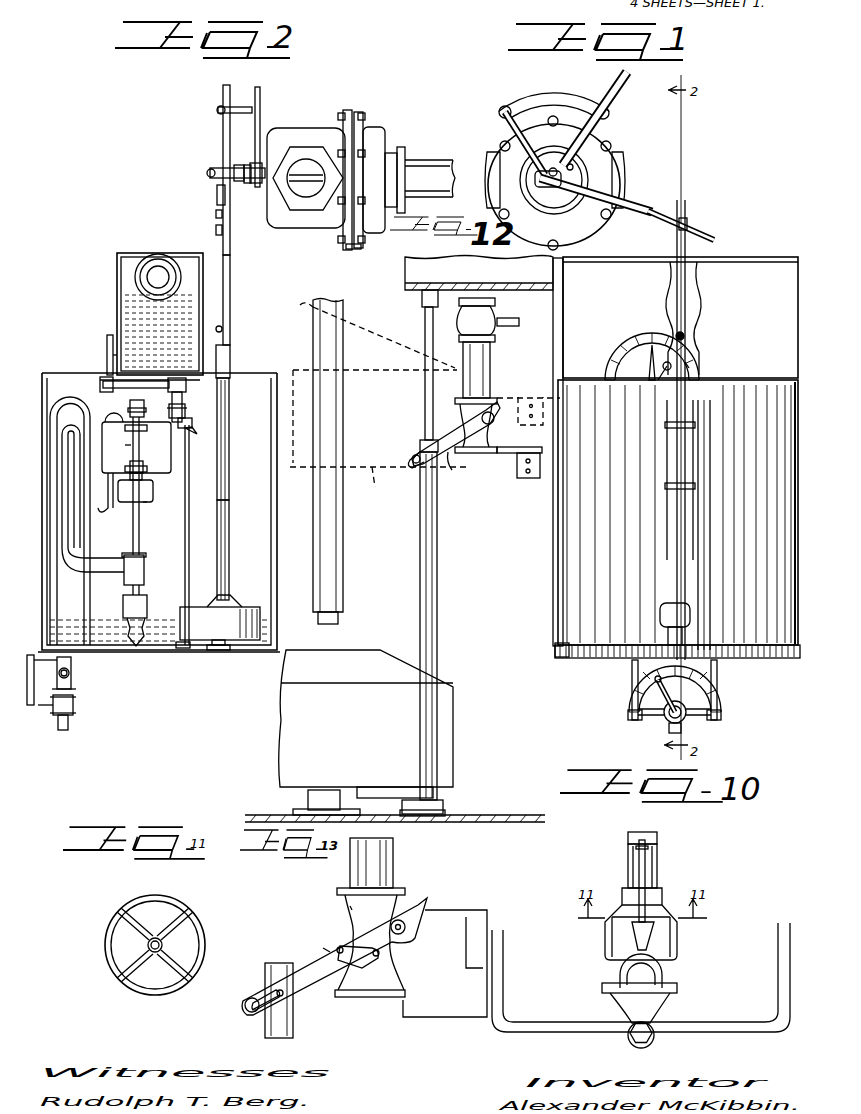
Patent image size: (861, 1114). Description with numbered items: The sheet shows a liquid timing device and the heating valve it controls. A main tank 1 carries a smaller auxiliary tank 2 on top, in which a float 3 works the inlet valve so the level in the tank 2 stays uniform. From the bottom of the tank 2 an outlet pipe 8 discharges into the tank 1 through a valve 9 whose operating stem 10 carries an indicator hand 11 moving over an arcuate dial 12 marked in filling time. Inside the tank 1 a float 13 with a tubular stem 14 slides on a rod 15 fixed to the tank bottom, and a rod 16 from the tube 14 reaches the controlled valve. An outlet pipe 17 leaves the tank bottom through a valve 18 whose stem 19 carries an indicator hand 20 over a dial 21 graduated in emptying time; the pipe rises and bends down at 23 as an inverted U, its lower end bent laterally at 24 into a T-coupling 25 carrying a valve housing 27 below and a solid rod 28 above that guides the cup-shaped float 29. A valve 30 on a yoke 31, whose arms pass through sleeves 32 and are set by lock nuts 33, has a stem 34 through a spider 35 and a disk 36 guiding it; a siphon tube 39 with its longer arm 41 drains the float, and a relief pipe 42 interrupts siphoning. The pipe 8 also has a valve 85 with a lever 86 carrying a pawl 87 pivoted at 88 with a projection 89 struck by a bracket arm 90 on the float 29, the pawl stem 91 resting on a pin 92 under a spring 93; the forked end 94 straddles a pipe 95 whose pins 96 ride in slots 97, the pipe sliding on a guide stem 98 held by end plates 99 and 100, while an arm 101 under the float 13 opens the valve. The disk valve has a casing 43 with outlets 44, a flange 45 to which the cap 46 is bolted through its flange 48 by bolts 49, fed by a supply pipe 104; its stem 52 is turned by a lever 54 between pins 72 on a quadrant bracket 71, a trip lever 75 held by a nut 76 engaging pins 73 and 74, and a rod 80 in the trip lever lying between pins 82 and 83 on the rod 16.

In FIG. 2, the main tank 1 is at (278, 503).
In FIG. 1, the main tank 1 is at (632, 542).
In FIG. 12, the main tank 1 is at (275, 504).
In FIG. 2, the auxiliary tank 2 is at (117, 264).
In FIG. 1, the auxiliary tank 2 is at (680, 317).
In FIG. 2, the float 3 is at (158, 255).
In FIG. 2, the outlet pipe 8 is at (172, 401).
In FIG. 12, the outlet pipe 8 is at (490, 366).
In FIG. 13, the outlet pipe 8 is at (393, 860).
In FIG. 2, the valve 9 is at (187, 386).
In FIG. 12, the valve 9 is at (480, 314).
In FIG. 2, the operating stem 10 is at (150, 388).
In FIG. 12, the operating stem 10 is at (518, 325).
In FIG. 2, the indicator hand 11 is at (108, 356).
In FIG. 1, the indicator hand 11 is at (686, 363).
In FIG. 2, the arcuate dial 12 is at (110, 337).
In FIG. 1, the arcuate dial 12 is at (638, 346).
In FIG. 2, the float 13 is at (233, 605).
In FIG. 1, the float 13 is at (668, 603).
In FIG. 12, the float 13 is at (366, 641).
In FIG. 2, the tubular stem 14 is at (230, 538).
In FIG. 12, the tubular stem 14 is at (340, 561).
In FIG. 2, the rod 15 is at (230, 443).
In FIG. 1, the rod 15 is at (530, 214).
In FIG. 12, the rod 15 is at (340, 618).
In FIG. 2, the rod 16 is at (230, 288).
In FIG. 1, the rod 16 is at (686, 288).
In FIG. 2, the outlet pipe 17 is at (72, 673).
In FIG. 1, the outlet pipe 17 is at (668, 730).
In FIG. 2, the valve 18 is at (75, 706).
In FIG. 2, the stem 19 is at (56, 720).
In FIG. 2, the indicator hand 20 is at (32, 672).
In FIG. 1, the indicator hand 20 is at (631, 709).
In FIG. 2, the arcuate dial 21 is at (59, 674).
In FIG. 1, the arcuate dial 21 is at (722, 702).
In FIG. 2, the downwardly bent portion of outlet pipe 23 is at (87, 548).
In FIG. 2, the lateral bend 24 is at (117, 573).
In FIG. 2, the T-coupling 25 is at (141, 568).
In FIG. 2, the valve housing 27 is at (147, 607).
In FIG. 11, the valve housing 27 is at (203, 957).
In FIG. 10, the valve housing 27 is at (677, 939).
In FIG. 2, the solid rod 28 is at (141, 531).
In FIG. 2, the automatic float 29 is at (136, 459).
In FIG. 10, the valve 30 is at (652, 978).
In FIG. 2, the yoke 31 is at (143, 513).
In FIG. 10, the yoke 31 is at (713, 1026).
In FIG. 2, the sleeves 32 is at (118, 447).
In FIG. 2, the lock nuts 33 is at (130, 407).
In FIG. 11, the stem 34 is at (147, 943).
In FIG. 10, the stem 34 is at (647, 873).
In FIG. 11, the spider 35 is at (172, 929).
In FIG. 10, the spider 35 is at (651, 911).
In FIG. 10, the disk 36 is at (632, 851).
In FIG. 2, the siphon tube 39 is at (106, 419).
In FIG. 2, the longer arm 41 is at (107, 500).
In FIG. 2, the relief pipe 42 is at (54, 497).
In FIG. 2, the casing 43 is at (303, 131).
In FIG. 1, the casing 43 is at (562, 207).
In FIG. 2, the outlet 44 is at (307, 193).
In FIG. 2, the flange 45 is at (347, 112).
In FIG. 2, the cup-shaped cap 46 is at (377, 134).
In FIG. 2, the flange 48 is at (352, 249).
In FIG. 2, the bolts 49 is at (363, 200).
In FIG. 2, the stem 52 is at (248, 186).
In FIG. 2, the lever 54 is at (223, 137).
In FIG. 1, the lever 54 is at (614, 80).
In FIG. 2, the quadrant bracket 71 is at (260, 118).
In FIG. 1, the quadrant bracket 71 is at (545, 104).
In FIG. 2, the pin 72 is at (238, 107).
In FIG. 1, the pin 72 is at (504, 106).
In FIG. 1, the pin 73 is at (553, 169).
In FIG. 1, the pin 74 is at (573, 168).
In FIG. 2, the trip lever 75 is at (219, 195).
In FIG. 1, the trip lever 75 is at (638, 209).
In FIG. 2, the nut 76 is at (213, 170).
In FIG. 1, the nut 76 is at (540, 180).
In FIG. 2, the rod 80 is at (217, 231).
In FIG. 1, the rod 80 is at (706, 236).
In FIG. 2, the pin 82 is at (217, 216).
In FIG. 1, the pin 82 is at (686, 222).
In FIG. 2, the pin 83 is at (222, 328).
In FIG. 1, the pin 83 is at (684, 333).
In FIG. 2, the valve 85 is at (192, 423).
In FIG. 12, the valve 85 is at (470, 412).
In FIG. 13, the valve 85 is at (348, 918).
In FIG. 2, the lever 86 is at (193, 434).
In FIG. 12, the lever 86 is at (451, 452).
In FIG. 13, the lever 86 is at (350, 908).
In FIG. 13, the pawl 87 is at (408, 939).
In FIG. 13, the pivot 88 is at (406, 930).
In FIG. 12, the projection 89 is at (497, 417).
In FIG. 13, the projection 89 is at (432, 895).
In FIG. 12, the bracket arm 90 is at (512, 458).
In FIG. 13, the bracket arm 90 is at (453, 913).
In FIG. 13, the stem 91 is at (338, 949).
In FIG. 13, the pin 92 is at (322, 950).
In FIG. 13, the spring 93 is at (360, 969).
In FIG. 12, the forked end 94 is at (418, 453).
In FIG. 13, the forked end 94 is at (265, 998).
In FIG. 2, the pipe 95 is at (190, 524).
In FIG. 12, the pipe 95 is at (434, 560).
In FIG. 13, the pipe 95 is at (264, 1030).
In FIG. 13, the pins 96 is at (284, 996).
In FIG. 13, the slots 97 is at (245, 1007).
In FIG. 2, the guide stem 98 is at (186, 411).
In FIG. 2, the end plate 99 is at (198, 648).
In FIG. 12, the end plate 99 is at (426, 380).
In FIG. 12, the end plate 100 is at (417, 295).
In FIG. 12, the arm 101 is at (375, 787).
In FIG. 2, the supply pipe 104 is at (428, 170).